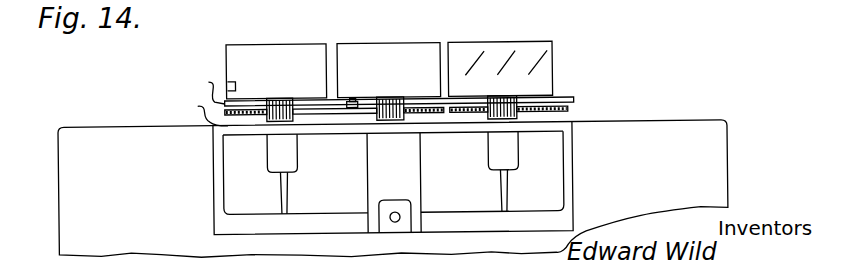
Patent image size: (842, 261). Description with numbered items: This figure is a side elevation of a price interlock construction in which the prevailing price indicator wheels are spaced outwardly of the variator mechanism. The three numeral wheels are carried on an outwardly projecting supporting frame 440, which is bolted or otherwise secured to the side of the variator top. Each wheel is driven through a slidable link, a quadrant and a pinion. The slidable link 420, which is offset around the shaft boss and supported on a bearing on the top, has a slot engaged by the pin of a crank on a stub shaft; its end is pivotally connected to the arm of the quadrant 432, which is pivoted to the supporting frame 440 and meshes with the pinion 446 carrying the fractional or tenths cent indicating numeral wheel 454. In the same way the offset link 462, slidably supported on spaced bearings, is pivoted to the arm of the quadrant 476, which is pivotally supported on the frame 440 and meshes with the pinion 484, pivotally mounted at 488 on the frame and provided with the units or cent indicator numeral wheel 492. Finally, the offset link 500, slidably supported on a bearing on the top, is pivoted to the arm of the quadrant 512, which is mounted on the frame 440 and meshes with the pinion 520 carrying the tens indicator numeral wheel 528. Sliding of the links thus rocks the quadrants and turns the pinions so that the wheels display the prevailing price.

The tens indicator numeral wheel 528 is at (250, 53).
The units or cent indicator numeral wheel 492 is at (392, 23).
The fractional or tenths cent indicating numeral wheel 454 is at (577, 20).
The offset link 500 is at (198, 91).
The quadrant 512 is at (194, 113).
The pinion 520 is at (271, 118).
The pinion 484 is at (378, 119).
The pivot mounting of pinion 488 is at (447, 60).
The slidable link 420 is at (563, 100).
The quadrant 432 is at (567, 110).
The quadrant 476 is at (428, 108).
The offset link 462 is at (357, 106).
The pinion 446 is at (548, 152).
The outwardly projecting supporting frame 440 is at (553, 190).